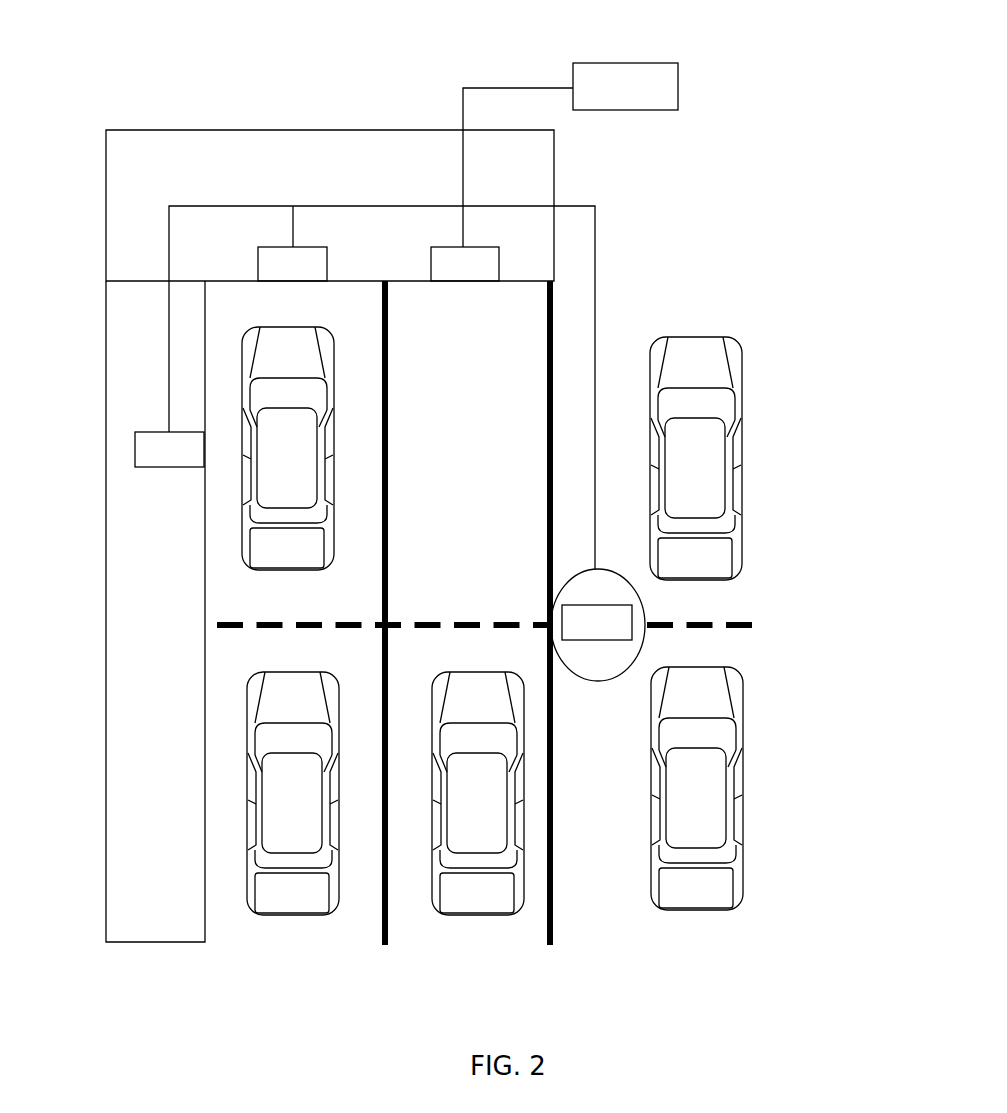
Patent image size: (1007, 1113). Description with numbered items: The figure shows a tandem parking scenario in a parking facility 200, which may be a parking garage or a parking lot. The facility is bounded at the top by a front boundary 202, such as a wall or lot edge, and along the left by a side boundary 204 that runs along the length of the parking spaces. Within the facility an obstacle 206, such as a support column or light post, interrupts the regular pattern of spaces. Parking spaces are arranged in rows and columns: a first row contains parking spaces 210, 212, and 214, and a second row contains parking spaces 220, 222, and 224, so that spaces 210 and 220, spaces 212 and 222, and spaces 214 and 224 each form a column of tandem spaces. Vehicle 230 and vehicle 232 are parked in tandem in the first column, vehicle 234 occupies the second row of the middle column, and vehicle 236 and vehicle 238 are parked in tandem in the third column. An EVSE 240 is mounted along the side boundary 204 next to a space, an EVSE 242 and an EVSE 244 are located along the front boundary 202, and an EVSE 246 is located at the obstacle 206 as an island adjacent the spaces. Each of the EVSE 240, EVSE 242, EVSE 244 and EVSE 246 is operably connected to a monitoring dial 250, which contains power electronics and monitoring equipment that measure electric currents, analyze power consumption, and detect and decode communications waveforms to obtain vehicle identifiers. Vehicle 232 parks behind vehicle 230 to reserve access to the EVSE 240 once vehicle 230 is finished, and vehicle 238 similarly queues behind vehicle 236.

The parking facility 200 is at (146, 73).
The front boundary 202 is at (345, 129).
The side boundary 204 is at (106, 621).
The obstacle 206 is at (604, 682).
The parking space 210 is at (295, 453).
The parking space 212 is at (466, 613).
The parking space 214 is at (656, 453).
The parking space 220 is at (295, 788).
The parking space 222 is at (469, 616).
The parking space 224 is at (656, 788).
The vehicle 230 is at (296, 352).
The vehicle 232 is at (300, 700).
The vehicle 234 is at (483, 700).
The vehicle 236 is at (703, 363).
The vehicle 238 is at (742, 700).
The EVSE 240 is at (135, 451).
The EVSE 242 is at (258, 266).
The EVSE 244 is at (431, 265).
The EVSE 246 is at (615, 604).
The monitoring dial 250 is at (617, 63).